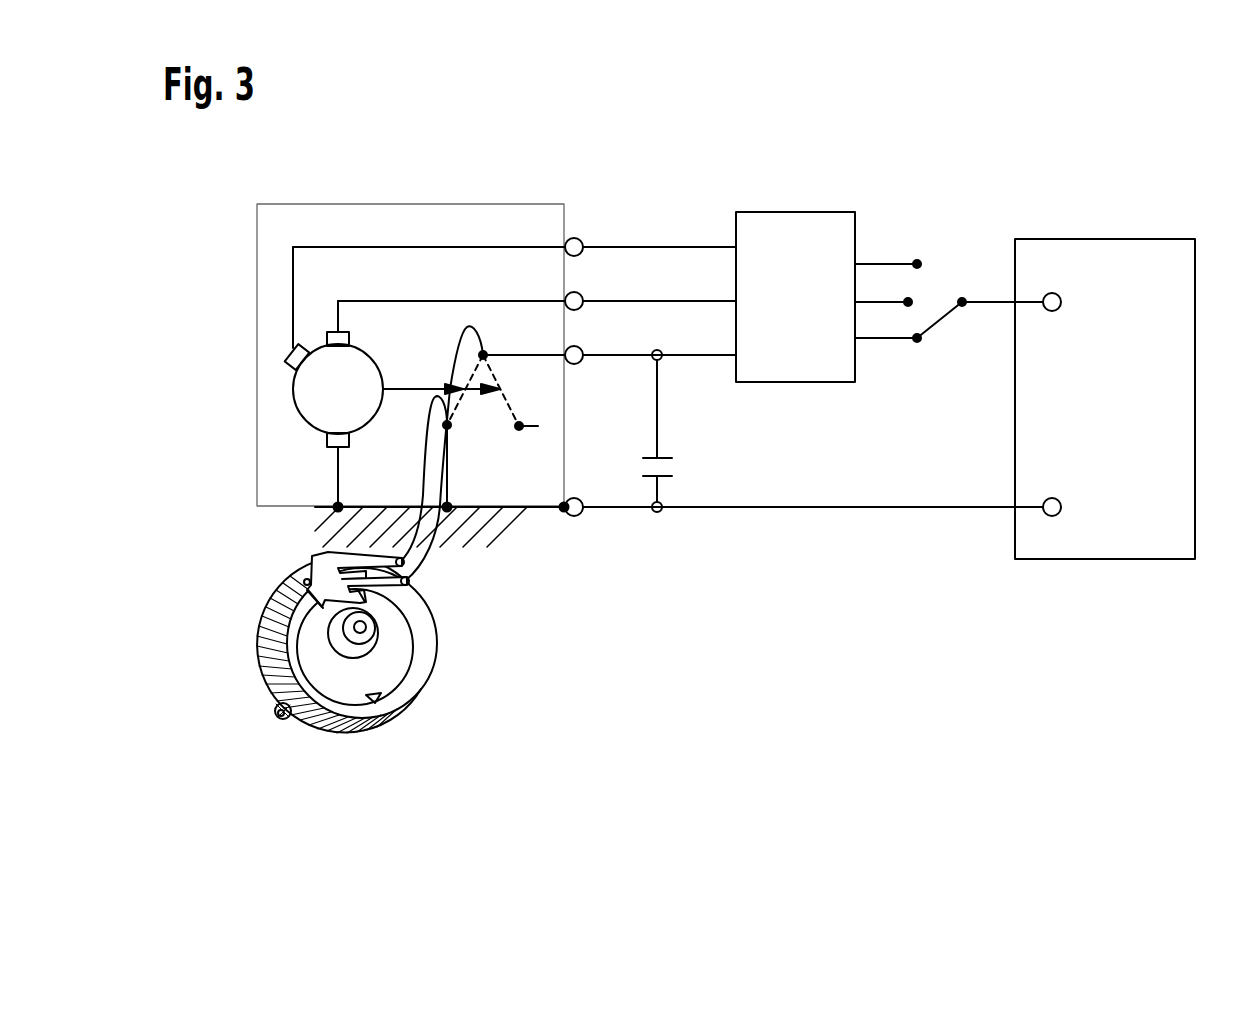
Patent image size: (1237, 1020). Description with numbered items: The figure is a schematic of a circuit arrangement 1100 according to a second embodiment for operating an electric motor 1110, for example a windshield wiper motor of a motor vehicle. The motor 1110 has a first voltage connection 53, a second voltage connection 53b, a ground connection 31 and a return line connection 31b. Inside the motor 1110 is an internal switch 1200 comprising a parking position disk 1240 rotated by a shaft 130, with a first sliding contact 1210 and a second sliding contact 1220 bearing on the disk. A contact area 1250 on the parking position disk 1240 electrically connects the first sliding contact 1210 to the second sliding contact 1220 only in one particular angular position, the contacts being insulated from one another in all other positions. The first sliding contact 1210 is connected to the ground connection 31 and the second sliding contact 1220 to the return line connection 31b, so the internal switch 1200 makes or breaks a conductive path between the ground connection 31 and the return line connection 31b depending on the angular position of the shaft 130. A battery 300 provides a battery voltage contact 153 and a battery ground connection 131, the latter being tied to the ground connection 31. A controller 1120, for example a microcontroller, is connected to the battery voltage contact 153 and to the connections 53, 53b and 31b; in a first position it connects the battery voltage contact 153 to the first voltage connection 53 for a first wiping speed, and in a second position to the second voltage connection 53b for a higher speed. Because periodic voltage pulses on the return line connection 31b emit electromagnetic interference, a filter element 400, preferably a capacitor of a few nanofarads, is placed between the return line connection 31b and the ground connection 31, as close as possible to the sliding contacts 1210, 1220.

The circuit arrangement 1100 is at (632, 158).
The electric motor 1110 is at (302, 383).
The controller 1120 is at (815, 235).
The battery 300 is at (1170, 262).
The battery voltage contact 153 is at (1062, 302).
The battery ground connection 131 is at (1062, 507).
The second voltage connection 53b is at (579, 240).
The first voltage connection 53 is at (579, 294).
The return line connection 31b is at (579, 348).
The ground connection 31 is at (574, 498).
The filter element 400 is at (678, 467).
The internal switch 1200 is at (375, 647).
The first sliding contact 1210 is at (337, 551).
The second sliding contact 1220 is at (409, 583).
The parking position disk 1240 is at (385, 680).
The contact area 1250 is at (263, 620).
The shaft 130 is at (273, 714).